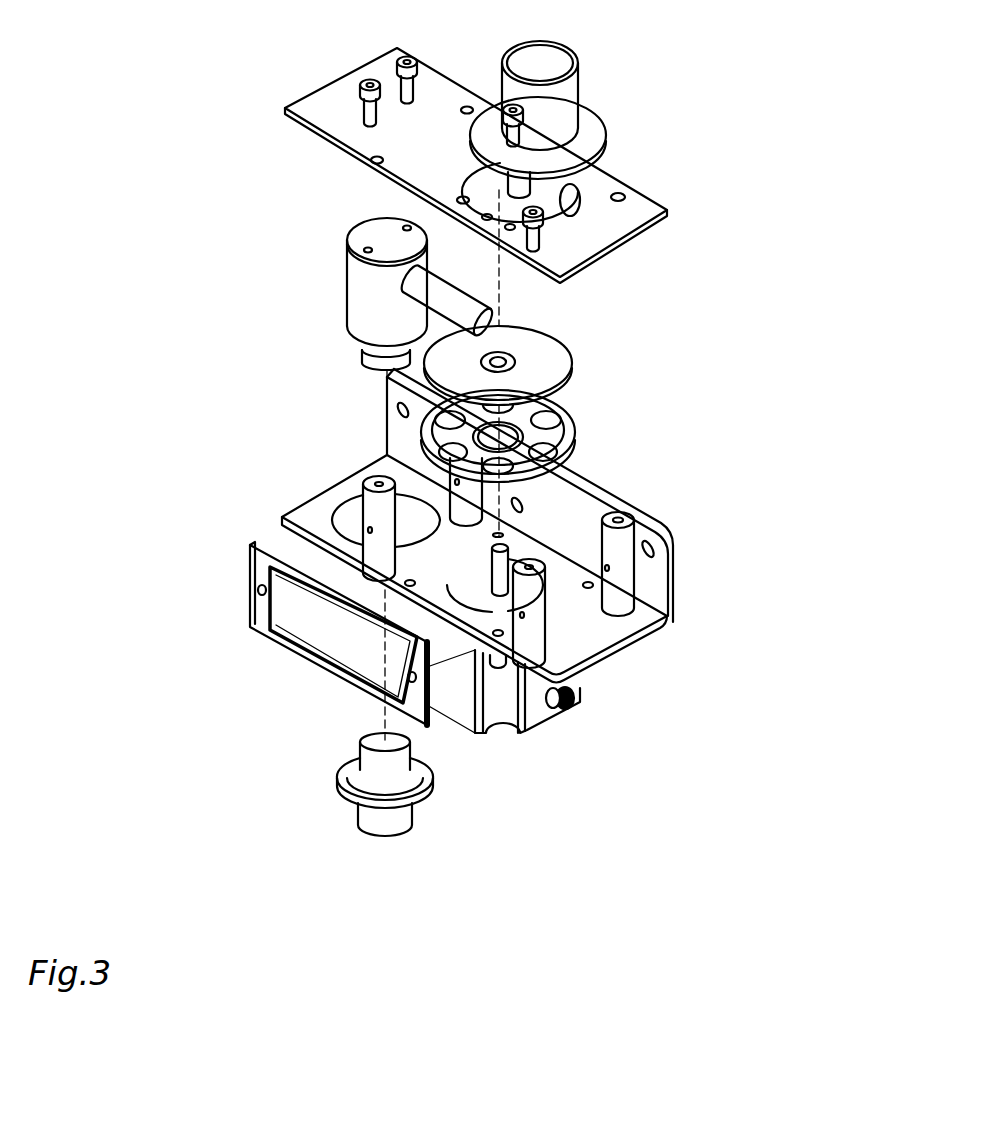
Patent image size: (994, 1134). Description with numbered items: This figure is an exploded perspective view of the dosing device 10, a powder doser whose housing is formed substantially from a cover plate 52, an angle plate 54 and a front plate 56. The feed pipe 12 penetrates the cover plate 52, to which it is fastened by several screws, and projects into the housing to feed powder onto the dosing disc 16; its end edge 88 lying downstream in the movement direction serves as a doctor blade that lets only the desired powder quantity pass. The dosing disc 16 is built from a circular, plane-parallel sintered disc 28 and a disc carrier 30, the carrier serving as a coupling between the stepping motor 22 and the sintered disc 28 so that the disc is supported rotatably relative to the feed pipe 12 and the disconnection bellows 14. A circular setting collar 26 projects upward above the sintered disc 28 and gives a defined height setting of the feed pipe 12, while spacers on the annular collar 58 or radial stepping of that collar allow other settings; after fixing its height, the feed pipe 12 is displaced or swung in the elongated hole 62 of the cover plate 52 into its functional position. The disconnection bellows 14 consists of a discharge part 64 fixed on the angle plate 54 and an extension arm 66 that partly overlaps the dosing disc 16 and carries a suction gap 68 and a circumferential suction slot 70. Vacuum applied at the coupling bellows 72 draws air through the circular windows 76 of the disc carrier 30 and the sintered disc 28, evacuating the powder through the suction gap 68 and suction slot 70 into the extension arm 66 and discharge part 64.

The apparatus 10 is at (794, 260).
The feed pipe 12 is at (563, 97).
The disconnection bellows 14 is at (372, 292).
The dosing disc 16 is at (580, 392).
The stepping motor 22 is at (533, 713).
The setting collar 26 is at (514, 356).
The sintered disc 28 is at (558, 363).
The disc carrier 30 is at (575, 428).
The cover plate 52 is at (648, 205).
The angle plate 54 is at (653, 583).
The front plate 56 is at (258, 620).
The annular collar 58 is at (489, 118).
The elongated hole 62 is at (480, 196).
The discharge part 64 is at (357, 283).
The extension arm 66 is at (470, 304).
The suction gap 68 is at (435, 390).
The suction slot 70 is at (433, 312).
The coupling bellows 72 is at (372, 820).
The circular windows 76 is at (563, 454).
The end edge 88 is at (480, 196).